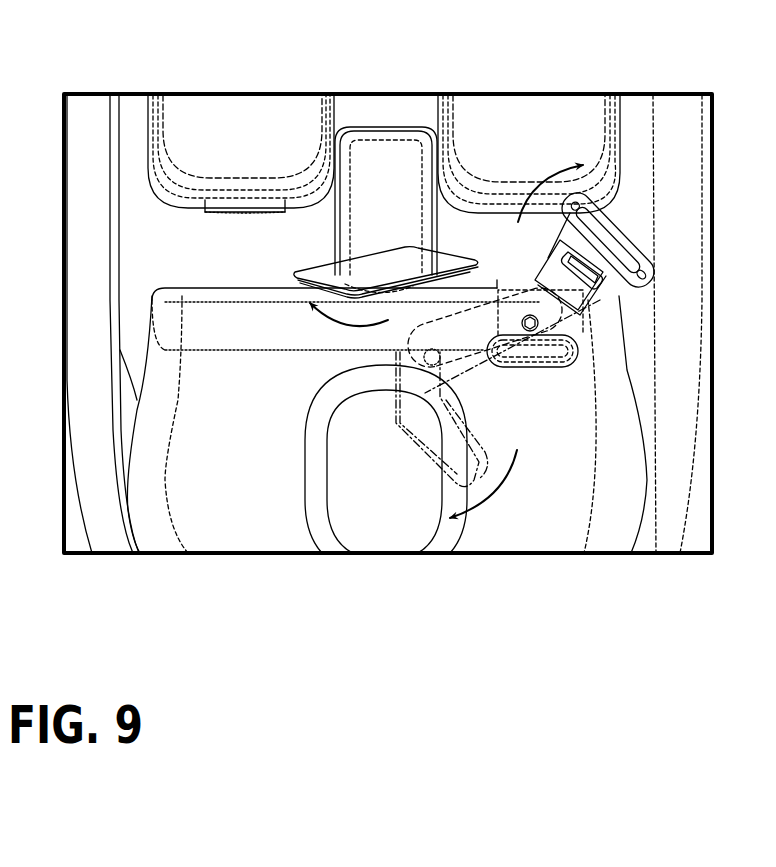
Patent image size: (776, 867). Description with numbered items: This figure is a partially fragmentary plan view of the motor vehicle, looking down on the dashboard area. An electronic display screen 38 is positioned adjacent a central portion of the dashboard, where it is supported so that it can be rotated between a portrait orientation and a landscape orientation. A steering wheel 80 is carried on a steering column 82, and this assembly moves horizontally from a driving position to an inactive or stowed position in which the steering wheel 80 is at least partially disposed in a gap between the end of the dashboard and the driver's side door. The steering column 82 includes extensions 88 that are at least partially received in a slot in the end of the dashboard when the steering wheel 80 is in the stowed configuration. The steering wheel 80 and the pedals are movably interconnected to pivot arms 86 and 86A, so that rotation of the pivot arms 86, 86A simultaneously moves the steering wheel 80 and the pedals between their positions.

The electronic display screen 38 is at (385, 152).
The steering wheel 80 is at (621, 222).
The steering column 82 is at (540, 275).
The extensions 88 is at (522, 222).
The pivot arm 86 is at (477, 363).
The pivot arm 86A is at (427, 443).